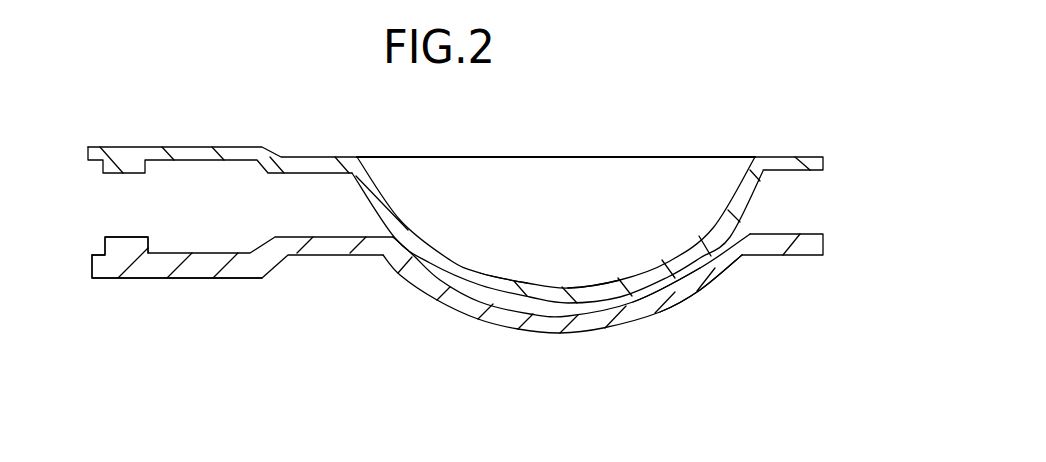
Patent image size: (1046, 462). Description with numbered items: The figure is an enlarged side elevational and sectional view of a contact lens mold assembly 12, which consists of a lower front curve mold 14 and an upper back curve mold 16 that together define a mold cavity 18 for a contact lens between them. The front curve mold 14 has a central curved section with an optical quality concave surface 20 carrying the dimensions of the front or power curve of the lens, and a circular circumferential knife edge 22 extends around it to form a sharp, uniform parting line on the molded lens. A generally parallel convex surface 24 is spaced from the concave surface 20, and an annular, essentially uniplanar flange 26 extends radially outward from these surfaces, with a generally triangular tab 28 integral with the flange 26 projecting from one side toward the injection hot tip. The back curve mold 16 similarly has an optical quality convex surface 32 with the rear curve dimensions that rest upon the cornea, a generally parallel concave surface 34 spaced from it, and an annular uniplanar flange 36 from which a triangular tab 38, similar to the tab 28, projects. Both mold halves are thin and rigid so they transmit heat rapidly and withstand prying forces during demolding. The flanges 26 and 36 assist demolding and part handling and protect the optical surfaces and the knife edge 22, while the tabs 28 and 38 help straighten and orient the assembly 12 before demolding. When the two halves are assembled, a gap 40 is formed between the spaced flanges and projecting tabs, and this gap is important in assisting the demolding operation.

The contact lens mold assembly 12 is at (602, 110).
The lower front curve mold 14 is at (392, 302).
The upper back curve mold 16 is at (487, 251).
The mold cavity 18 is at (545, 305).
The concave surface 20 is at (651, 300).
The knife edge 22 is at (405, 226).
The convex surface 24 is at (700, 292).
The flange 26 is at (350, 236).
The triangular tab 28 is at (158, 289).
The convex surface 32 is at (596, 287).
The concave surface 34 is at (521, 286).
The flange 36 is at (288, 156).
The triangular tab 38 is at (180, 133).
The gap 40 is at (296, 176).